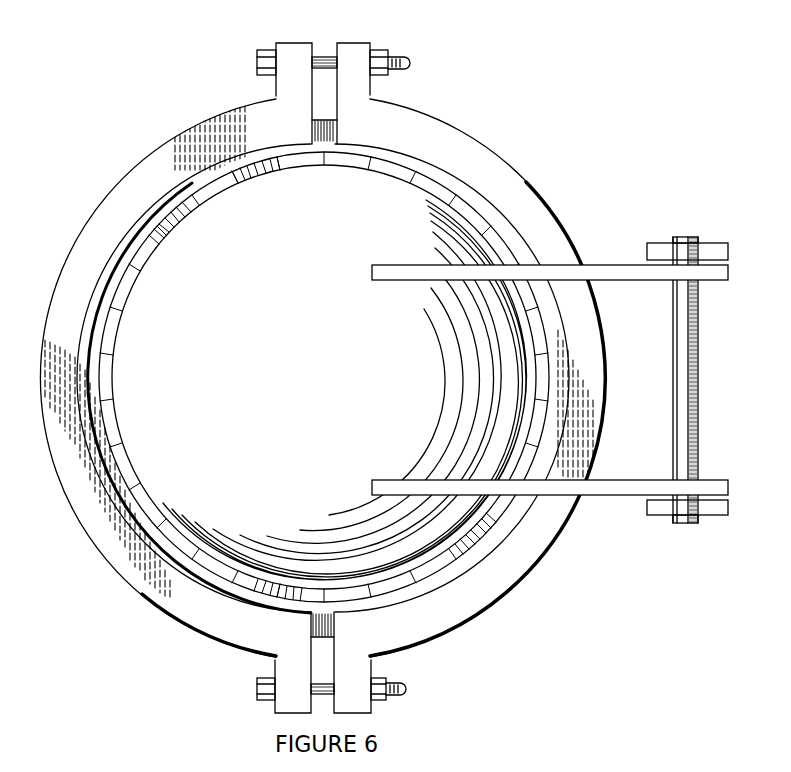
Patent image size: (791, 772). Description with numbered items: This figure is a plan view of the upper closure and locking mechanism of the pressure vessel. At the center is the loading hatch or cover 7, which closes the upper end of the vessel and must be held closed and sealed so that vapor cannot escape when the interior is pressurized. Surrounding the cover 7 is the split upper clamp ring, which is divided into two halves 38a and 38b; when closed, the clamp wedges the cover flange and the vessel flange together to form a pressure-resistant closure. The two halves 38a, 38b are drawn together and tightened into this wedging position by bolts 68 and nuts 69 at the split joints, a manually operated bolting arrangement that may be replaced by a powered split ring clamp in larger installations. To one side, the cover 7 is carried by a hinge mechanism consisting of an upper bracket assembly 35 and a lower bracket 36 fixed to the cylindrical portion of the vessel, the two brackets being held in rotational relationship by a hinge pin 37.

The cover 7 is at (428, 232).
The upper bracket assembly 35 is at (622, 265).
The lower bracket 36 is at (717, 243).
The hinge pin 37 is at (700, 333).
The clamp half 38a is at (487, 141).
The clamp half 38b is at (167, 136).
The bolt 68 is at (407, 56).
The nut 69 is at (373, 52).